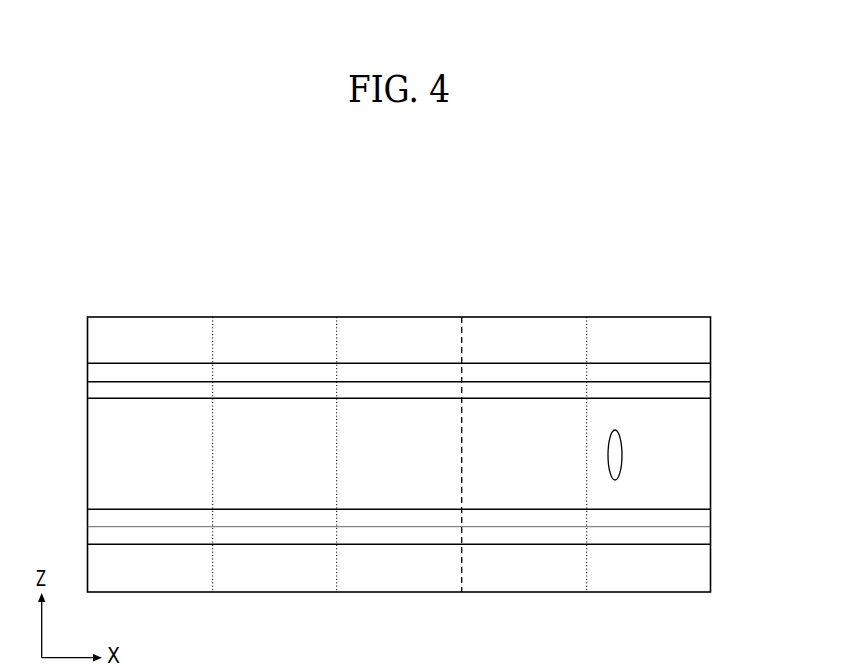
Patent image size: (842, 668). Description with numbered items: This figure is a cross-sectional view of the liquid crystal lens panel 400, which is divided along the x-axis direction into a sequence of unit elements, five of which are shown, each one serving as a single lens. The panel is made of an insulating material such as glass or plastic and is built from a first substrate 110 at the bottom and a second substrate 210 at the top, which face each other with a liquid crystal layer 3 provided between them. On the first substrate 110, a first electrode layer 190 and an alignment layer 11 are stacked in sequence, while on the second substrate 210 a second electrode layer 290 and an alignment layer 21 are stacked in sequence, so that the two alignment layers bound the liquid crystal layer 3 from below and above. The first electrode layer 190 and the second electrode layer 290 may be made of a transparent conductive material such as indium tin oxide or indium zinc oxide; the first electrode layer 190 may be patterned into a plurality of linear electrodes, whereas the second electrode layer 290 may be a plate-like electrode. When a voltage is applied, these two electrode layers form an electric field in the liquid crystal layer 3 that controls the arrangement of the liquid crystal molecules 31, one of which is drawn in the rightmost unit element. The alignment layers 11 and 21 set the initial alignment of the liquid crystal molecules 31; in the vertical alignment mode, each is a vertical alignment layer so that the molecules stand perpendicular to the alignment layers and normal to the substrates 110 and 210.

The liquid crystal lens panel 400 is at (415, 228).
The second substrate 210 is at (703, 340).
The second electrode layer 290 is at (703, 374).
The alignment layer 21 is at (703, 389).
The liquid crystal layer 3 is at (700, 444).
The liquid crystal molecules 31 is at (620, 470).
The alignment layer 11 is at (700, 518).
The first electrode layer 190 is at (703, 535).
The first substrate 110 is at (703, 570).